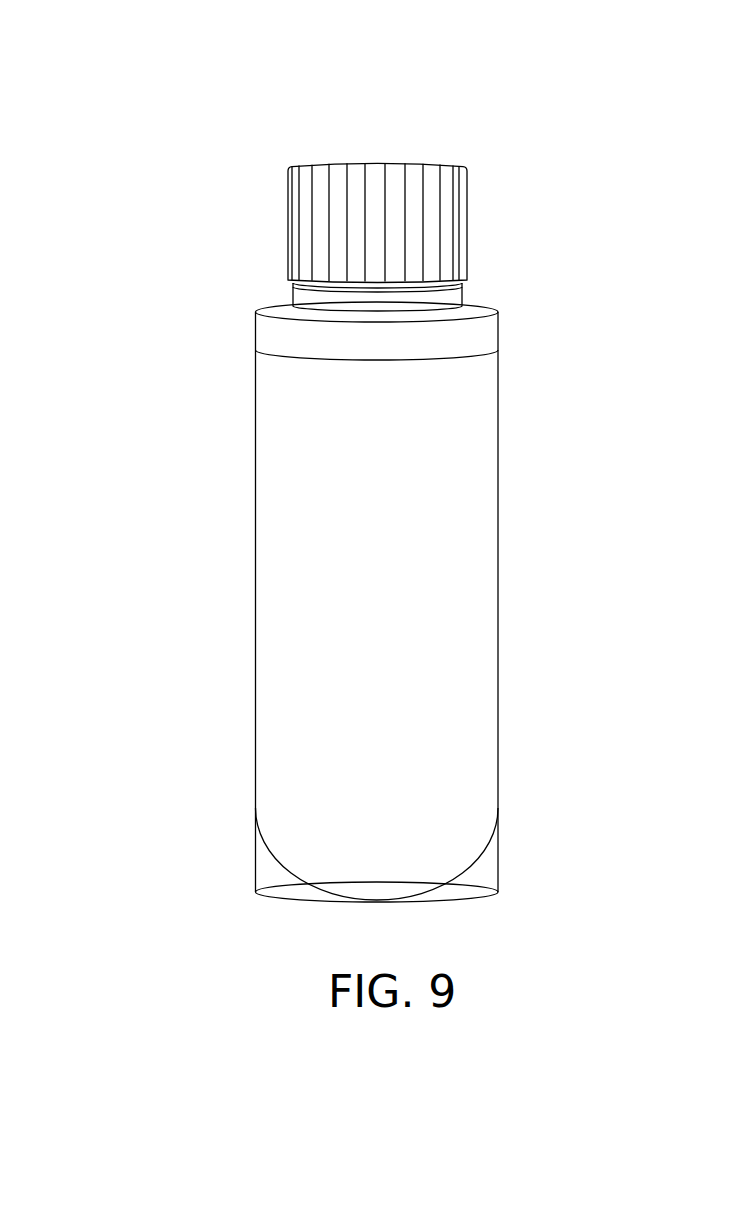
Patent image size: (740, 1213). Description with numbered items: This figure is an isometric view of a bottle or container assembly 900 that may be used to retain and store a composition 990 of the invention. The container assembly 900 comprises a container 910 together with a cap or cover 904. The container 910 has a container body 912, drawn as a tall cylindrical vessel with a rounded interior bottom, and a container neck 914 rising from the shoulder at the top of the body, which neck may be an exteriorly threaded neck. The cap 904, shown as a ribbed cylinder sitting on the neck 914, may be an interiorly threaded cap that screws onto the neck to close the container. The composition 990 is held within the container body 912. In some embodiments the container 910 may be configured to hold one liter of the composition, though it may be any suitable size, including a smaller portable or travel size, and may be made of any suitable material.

The container assembly 900 is at (196, 57).
The cap 904 is at (445, 222).
The container 910 is at (500, 340).
The container body 912 is at (500, 447).
The container neck 914 is at (300, 298).
The composition 990 is at (272, 372).